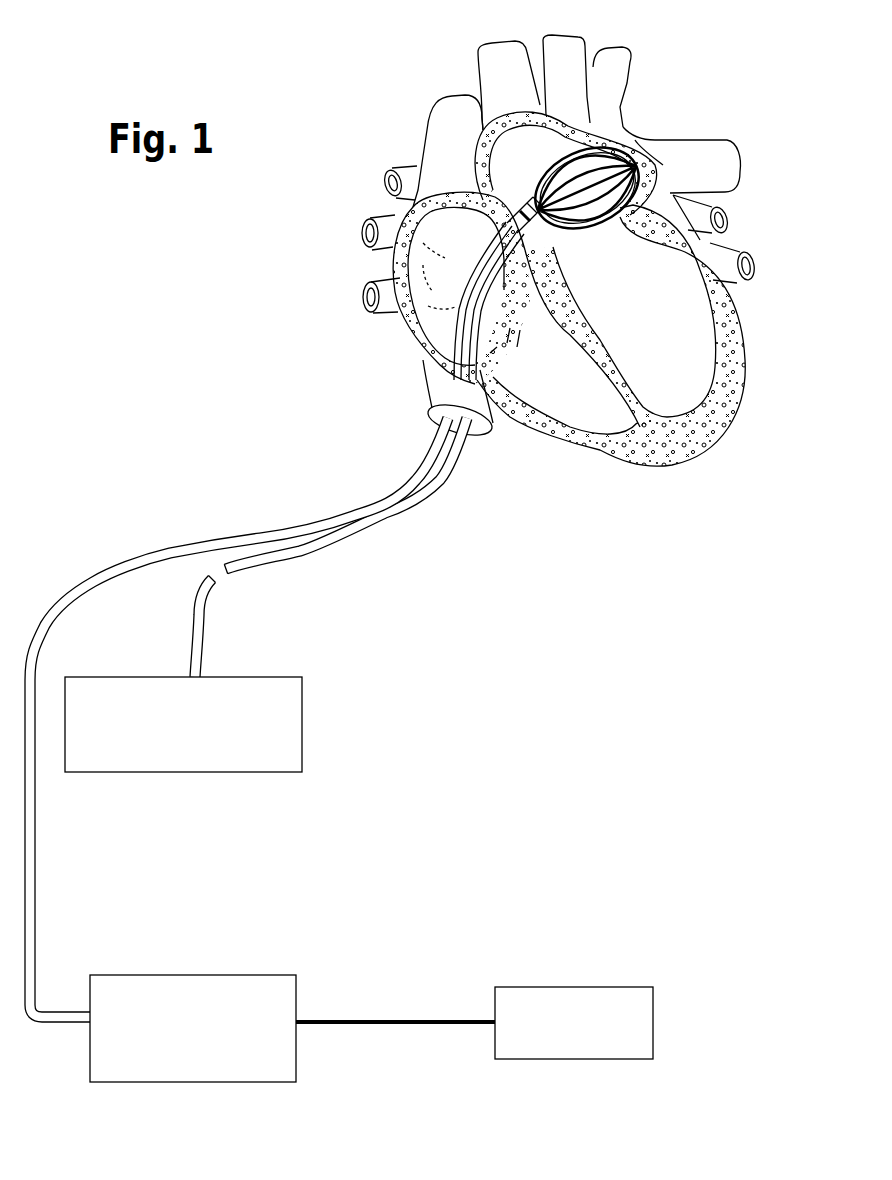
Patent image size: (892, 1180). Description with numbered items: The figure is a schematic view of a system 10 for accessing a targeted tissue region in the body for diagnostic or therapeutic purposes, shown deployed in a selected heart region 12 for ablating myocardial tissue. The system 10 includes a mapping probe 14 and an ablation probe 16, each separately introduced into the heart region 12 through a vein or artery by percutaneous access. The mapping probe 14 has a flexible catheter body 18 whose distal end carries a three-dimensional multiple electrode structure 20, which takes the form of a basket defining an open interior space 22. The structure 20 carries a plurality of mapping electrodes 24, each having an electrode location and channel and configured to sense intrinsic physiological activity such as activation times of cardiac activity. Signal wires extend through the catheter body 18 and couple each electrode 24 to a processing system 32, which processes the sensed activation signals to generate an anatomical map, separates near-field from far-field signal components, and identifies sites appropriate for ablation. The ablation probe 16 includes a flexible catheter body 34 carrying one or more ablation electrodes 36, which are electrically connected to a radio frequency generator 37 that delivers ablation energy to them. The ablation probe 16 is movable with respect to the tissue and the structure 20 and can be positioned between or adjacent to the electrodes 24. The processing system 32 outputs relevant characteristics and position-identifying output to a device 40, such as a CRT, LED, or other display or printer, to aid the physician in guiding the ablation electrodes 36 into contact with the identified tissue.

The system 10 is at (472, 644).
The heart region 12 is at (664, 312).
The mapping probe 14 is at (468, 266).
The ablation probe 16 is at (548, 243).
The catheter body 18 is at (480, 256).
The multiple electrode structure 20 is at (655, 167).
The open interior space 22 is at (571, 160).
The mapping electrodes 24 is at (560, 165).
The processing system 32 is at (220, 975).
The catheter body 34 is at (488, 333).
The ablation electrodes 36 is at (612, 148).
The radio frequency generator 37 is at (172, 775).
The device 40 is at (593, 987).